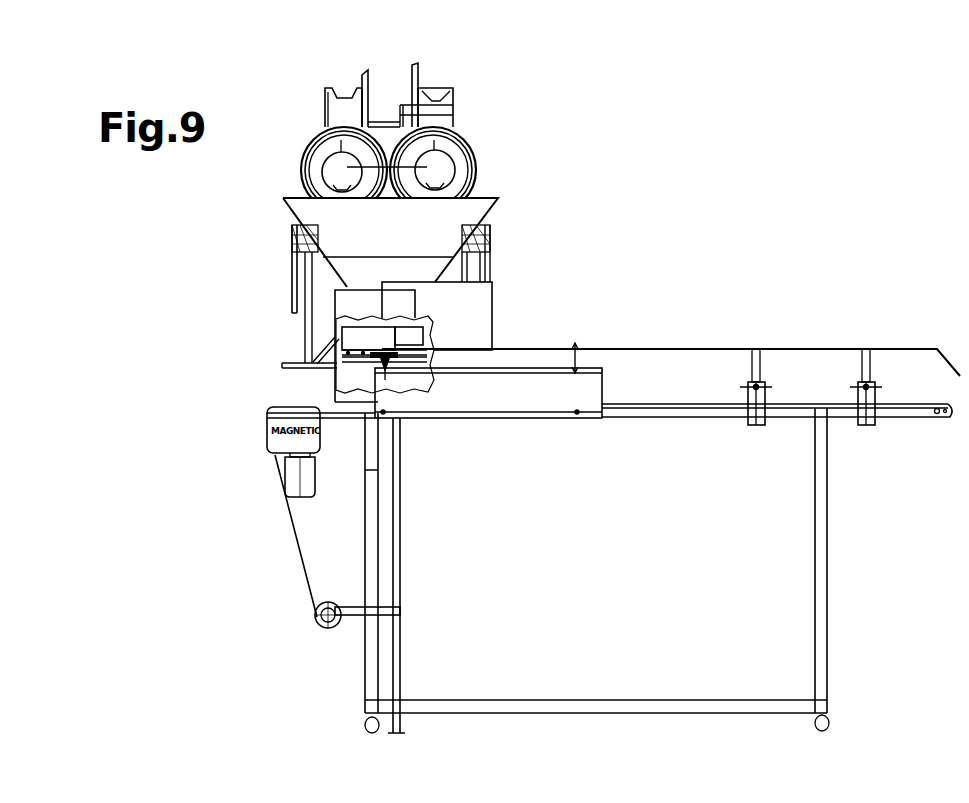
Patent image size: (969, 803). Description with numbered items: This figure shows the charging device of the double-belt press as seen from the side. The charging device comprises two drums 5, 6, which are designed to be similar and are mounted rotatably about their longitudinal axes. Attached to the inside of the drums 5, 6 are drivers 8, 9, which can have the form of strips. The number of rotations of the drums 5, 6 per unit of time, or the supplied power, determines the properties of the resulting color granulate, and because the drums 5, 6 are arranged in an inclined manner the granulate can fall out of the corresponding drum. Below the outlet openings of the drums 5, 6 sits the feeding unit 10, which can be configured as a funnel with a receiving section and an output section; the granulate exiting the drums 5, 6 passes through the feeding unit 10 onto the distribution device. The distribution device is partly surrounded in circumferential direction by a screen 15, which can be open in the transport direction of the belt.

The drum 5 is at (458, 172).
The drum 6 is at (300, 161).
The driver 8 is at (447, 132).
The driver 9 is at (325, 137).
The feeding unit 10 is at (467, 220).
The screen 15 is at (347, 308).